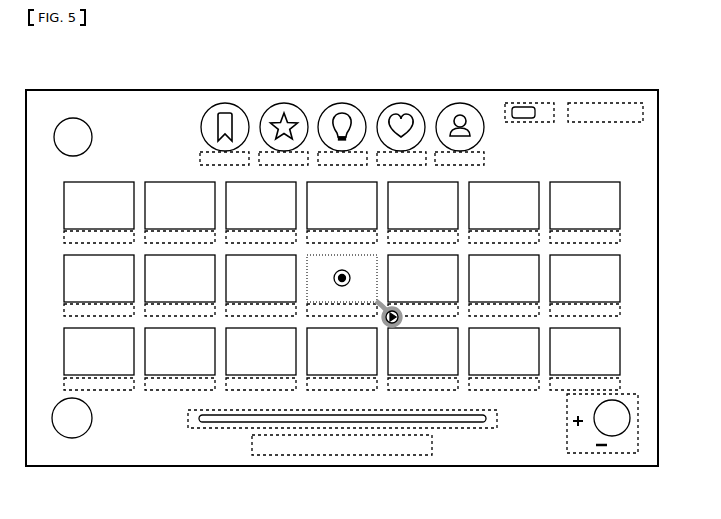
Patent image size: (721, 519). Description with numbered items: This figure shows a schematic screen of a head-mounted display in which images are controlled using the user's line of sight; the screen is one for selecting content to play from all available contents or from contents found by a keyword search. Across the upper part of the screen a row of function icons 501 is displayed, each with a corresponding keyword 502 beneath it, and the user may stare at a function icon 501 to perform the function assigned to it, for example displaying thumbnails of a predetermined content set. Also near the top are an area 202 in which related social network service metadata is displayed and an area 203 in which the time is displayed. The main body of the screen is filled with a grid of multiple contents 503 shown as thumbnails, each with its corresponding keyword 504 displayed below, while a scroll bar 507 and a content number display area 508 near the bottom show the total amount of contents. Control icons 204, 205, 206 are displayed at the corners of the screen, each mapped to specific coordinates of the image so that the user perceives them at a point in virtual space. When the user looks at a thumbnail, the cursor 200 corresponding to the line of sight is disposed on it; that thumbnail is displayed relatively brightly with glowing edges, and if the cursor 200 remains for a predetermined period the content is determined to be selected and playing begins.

The cursor 200 is at (333, 278).
The area in which related SNS metadata is displayed 202 is at (528, 103).
The area in which the time is displayed 203 is at (606, 103).
The control icon 204 is at (73, 118).
The control icon 205 is at (72, 438).
The control icon 206 is at (600, 453).
The function icon 501 is at (226, 103).
The keyword 502 is at (200, 158).
The contents 503 is at (120, 181).
The keyword 504 is at (64, 237).
The scroll bar 507 is at (447, 429).
The content number display area 508 is at (340, 455).